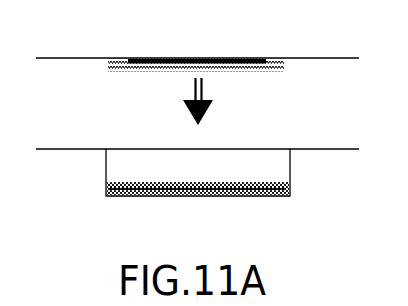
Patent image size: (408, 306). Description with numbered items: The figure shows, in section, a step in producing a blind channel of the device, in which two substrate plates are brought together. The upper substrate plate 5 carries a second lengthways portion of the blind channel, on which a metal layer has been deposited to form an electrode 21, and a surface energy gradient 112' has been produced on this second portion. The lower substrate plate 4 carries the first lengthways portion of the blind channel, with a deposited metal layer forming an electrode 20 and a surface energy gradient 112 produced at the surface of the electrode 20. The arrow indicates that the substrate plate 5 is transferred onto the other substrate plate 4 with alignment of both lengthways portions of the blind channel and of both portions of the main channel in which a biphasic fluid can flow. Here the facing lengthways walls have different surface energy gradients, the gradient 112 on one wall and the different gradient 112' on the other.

The substrate plate 5 is at (311, 43).
The electrode 21 is at (166, 62).
The surface energy gradient 112' is at (223, 89).
The substrate plate 4 is at (310, 165).
The surface energy gradient 112 is at (219, 214).
The electrode 20 is at (147, 195).